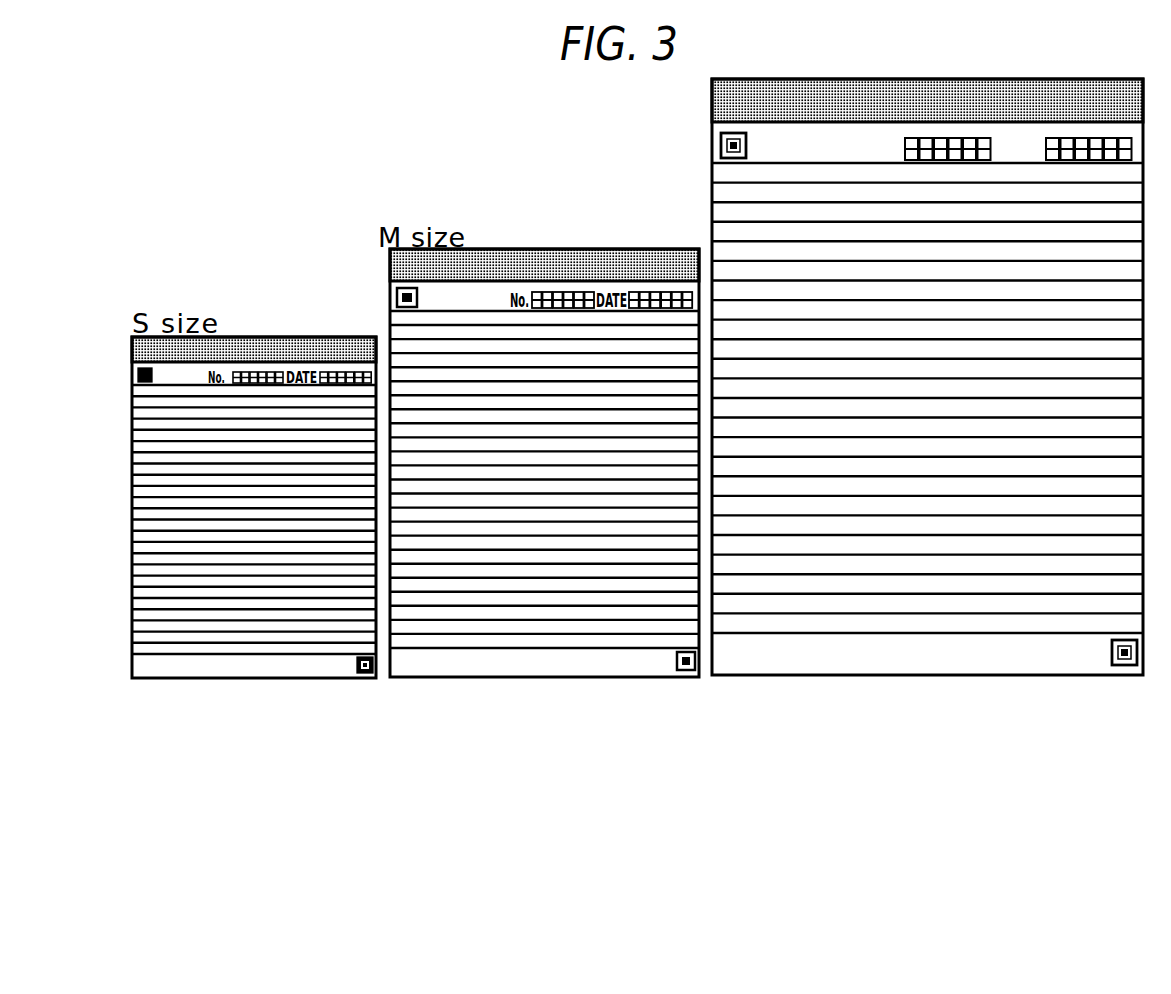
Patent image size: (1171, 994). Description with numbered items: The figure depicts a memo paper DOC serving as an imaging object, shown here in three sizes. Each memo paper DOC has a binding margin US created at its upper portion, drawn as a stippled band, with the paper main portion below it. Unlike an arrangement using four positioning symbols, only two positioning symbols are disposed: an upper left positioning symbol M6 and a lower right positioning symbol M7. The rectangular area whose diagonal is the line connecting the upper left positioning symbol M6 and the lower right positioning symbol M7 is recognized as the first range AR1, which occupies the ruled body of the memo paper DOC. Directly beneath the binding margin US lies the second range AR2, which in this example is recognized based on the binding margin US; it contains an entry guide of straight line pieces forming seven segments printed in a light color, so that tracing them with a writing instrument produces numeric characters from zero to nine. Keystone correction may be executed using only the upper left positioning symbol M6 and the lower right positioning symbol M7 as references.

The memo paper DOC is at (841, 78).
The binding margin US is at (927, 97).
The second range AR2 is at (1005, 128).
The first range AR1 is at (877, 583).
The upper left positioning symbol M6 is at (721, 146).
The lower right positioning symbol M7 is at (1121, 667).